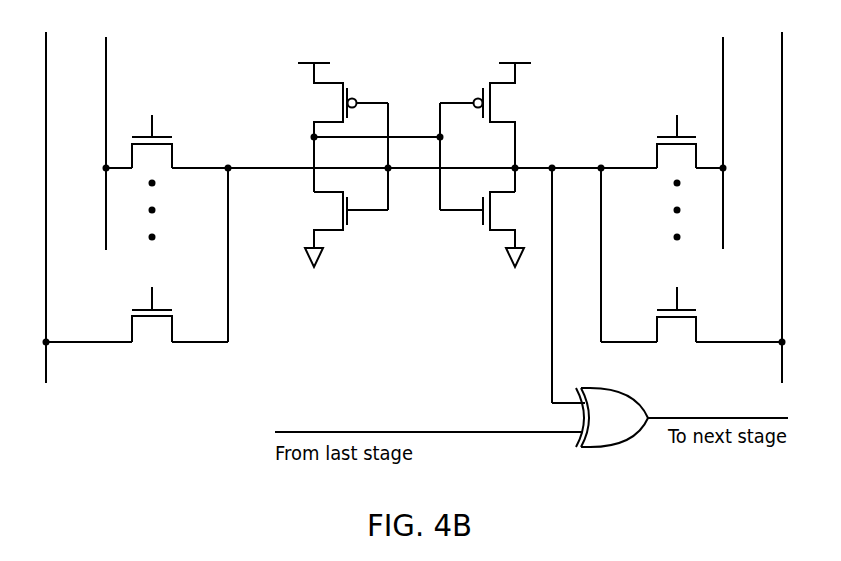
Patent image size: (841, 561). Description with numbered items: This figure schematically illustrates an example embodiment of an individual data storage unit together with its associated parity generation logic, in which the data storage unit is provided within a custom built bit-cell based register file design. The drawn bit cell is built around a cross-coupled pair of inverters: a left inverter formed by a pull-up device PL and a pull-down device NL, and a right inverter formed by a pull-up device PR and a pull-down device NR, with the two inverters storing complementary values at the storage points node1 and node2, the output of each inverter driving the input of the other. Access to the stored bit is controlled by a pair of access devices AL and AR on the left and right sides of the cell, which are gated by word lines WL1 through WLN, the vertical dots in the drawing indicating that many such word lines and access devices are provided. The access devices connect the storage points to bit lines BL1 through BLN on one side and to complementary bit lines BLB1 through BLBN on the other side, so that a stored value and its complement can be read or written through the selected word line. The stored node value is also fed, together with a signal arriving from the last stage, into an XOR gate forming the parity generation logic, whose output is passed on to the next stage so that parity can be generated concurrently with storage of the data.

The bit line N BLN is at (46, 193).
The bit line 1 BL1 is at (105, 126).
The complementary bit line 1 BLB1 is at (723, 126).
The complementary bit line N BLBN is at (782, 193).
The word line 1 WL1 is at (414, 113).
The word line N WLN is at (414, 286).
The left access transistor AL is at (152, 244).
The right access transistor AR is at (676, 244).
The left pull-up PMOS transistor PL is at (343, 127).
The left pull-down NMOS transistor NL is at (346, 229).
The right pull-up PMOS transistor PR is at (485, 127).
The right pull-down NMOS transistor NR is at (482, 229).
The storage node 1 node1 is at (377, 156).
The storage node 2 node2 is at (496, 253).